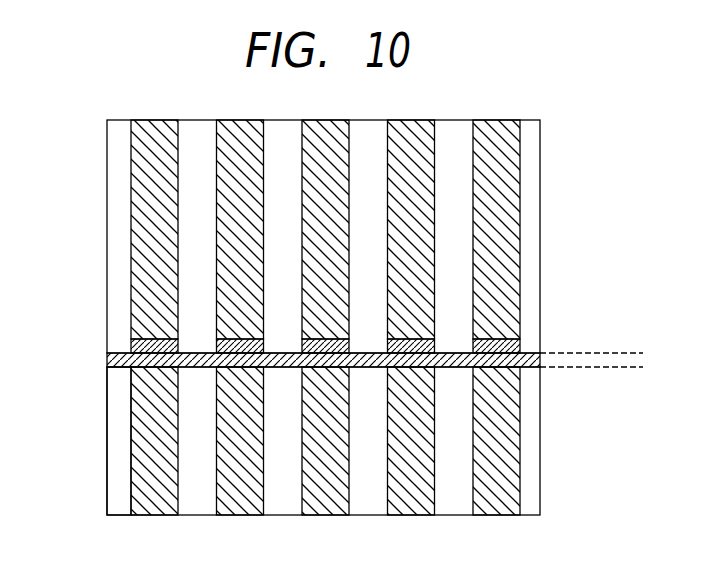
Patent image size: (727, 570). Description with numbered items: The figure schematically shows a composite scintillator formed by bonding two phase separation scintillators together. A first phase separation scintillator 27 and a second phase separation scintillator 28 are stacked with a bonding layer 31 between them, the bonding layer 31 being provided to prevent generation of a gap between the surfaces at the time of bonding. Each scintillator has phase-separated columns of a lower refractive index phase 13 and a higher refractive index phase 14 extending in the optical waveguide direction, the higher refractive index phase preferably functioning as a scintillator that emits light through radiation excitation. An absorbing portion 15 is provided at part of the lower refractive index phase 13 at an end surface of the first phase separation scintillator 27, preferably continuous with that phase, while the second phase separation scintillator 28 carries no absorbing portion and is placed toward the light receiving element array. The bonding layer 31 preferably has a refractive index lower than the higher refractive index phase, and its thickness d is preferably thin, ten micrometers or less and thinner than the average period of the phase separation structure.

The first phase separation scintillator 27 is at (549, 199).
The second phase separation scintillator 28 is at (336, 441).
The absorbing portion 15 is at (514, 324).
The bonding layer 31 is at (110, 360).
The higher refractive index phase 14 is at (117, 420).
The lower refractive index phase 13 is at (152, 468).
The thickness of the bonding layer d is at (630, 323).